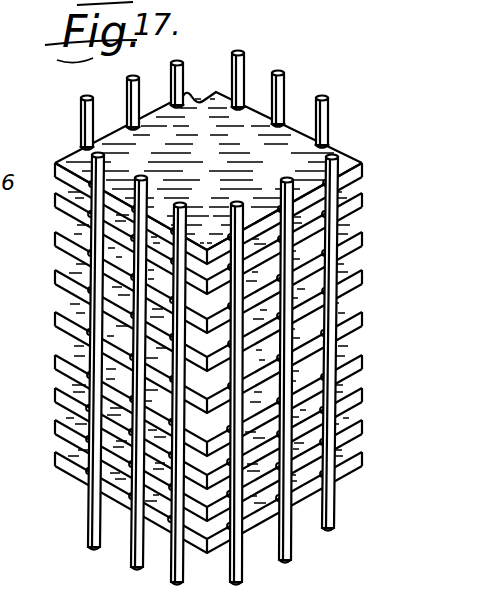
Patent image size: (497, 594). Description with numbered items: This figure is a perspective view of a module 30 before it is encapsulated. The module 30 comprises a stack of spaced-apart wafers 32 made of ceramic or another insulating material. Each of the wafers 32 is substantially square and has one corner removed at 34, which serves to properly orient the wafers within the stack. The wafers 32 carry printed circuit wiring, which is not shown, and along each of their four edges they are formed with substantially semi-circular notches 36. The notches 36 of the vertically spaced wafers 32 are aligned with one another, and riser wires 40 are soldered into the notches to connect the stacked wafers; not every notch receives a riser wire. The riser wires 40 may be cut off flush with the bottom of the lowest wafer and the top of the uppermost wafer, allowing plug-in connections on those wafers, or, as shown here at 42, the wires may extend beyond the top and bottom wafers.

The module 30 is at (310, 92).
The wafers 32 is at (362, 236).
The removed corner 34 is at (212, 91).
The semi-circular notches 36 is at (314, 152).
The riser wires 40 is at (133, 353).
The extending riser wire ends 42 is at (127, 82).